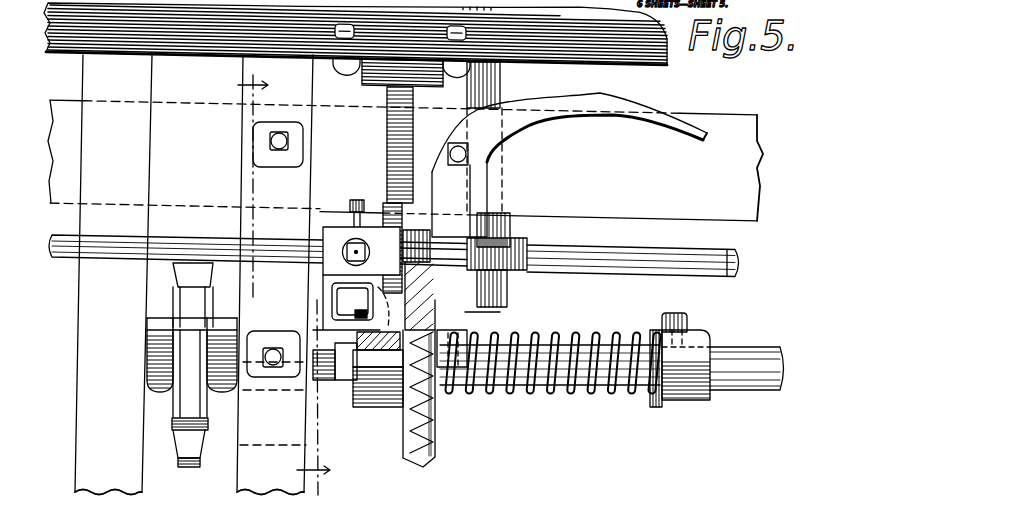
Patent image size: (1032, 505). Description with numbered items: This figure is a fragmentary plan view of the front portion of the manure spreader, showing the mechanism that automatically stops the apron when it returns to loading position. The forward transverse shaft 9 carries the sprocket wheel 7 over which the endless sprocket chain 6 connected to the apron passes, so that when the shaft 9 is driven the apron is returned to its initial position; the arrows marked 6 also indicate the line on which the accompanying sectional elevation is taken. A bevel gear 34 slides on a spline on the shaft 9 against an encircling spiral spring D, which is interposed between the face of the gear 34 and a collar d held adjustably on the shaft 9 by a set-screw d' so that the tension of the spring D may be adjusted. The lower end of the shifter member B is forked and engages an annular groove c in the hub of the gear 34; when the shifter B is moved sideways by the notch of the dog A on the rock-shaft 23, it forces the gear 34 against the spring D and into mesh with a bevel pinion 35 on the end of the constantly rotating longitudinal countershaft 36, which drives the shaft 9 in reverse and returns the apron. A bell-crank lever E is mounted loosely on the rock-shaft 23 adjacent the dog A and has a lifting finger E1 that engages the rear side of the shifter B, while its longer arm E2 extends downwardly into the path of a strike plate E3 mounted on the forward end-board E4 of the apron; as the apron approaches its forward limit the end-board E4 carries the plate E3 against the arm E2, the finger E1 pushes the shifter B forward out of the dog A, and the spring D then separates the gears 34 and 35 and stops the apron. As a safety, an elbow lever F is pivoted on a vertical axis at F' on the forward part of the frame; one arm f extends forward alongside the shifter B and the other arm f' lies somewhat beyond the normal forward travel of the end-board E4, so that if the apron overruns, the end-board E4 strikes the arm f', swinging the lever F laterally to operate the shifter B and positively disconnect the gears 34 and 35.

The sprocket chain 6 is at (284, 282).
The sprocket wheel 7 is at (190, 452).
The forward transverse shaft 9 is at (742, 347).
The rock-shaft 23 is at (620, 257).
The bevel gear 34 is at (417, 467).
The bevel pinion 35 is at (513, 242).
The longitudinal two-part shaft 36 is at (502, 90).
The dog A is at (345, 373).
The shifter member B is at (350, 402).
The annular groove c is at (370, 408).
The spiral spring D is at (560, 392).
The collar d is at (680, 380).
The set-screw d' is at (682, 310).
The bell-crank lever E is at (413, 223).
The lifting-finger E1 is at (397, 407).
The longer arm E2 is at (392, 142).
The strike-plate E3 is at (368, 90).
The forward end-board E4 is at (355, 41).
The elbow lever F is at (569, 120).
The pivot F' is at (453, 175).
The arm f is at (485, 320).
The arm f' is at (689, 109).